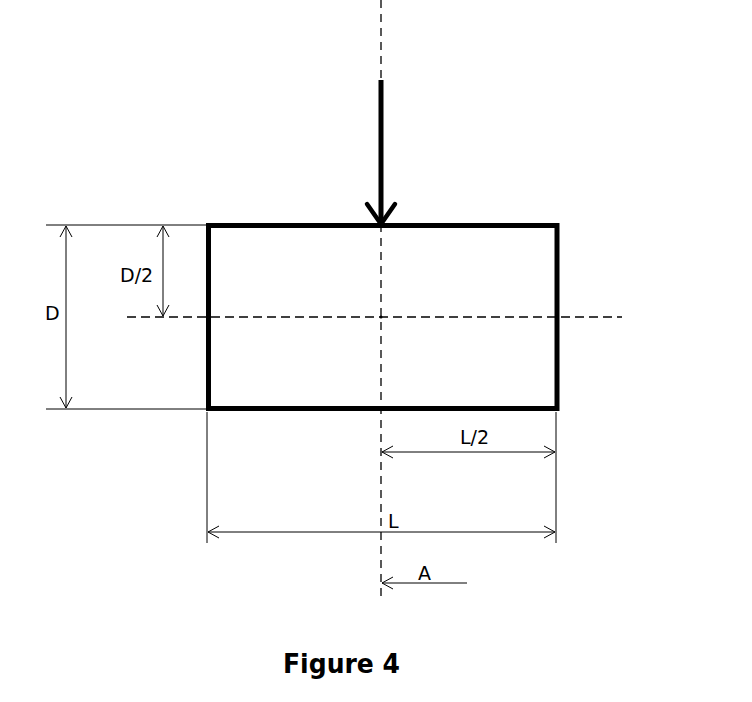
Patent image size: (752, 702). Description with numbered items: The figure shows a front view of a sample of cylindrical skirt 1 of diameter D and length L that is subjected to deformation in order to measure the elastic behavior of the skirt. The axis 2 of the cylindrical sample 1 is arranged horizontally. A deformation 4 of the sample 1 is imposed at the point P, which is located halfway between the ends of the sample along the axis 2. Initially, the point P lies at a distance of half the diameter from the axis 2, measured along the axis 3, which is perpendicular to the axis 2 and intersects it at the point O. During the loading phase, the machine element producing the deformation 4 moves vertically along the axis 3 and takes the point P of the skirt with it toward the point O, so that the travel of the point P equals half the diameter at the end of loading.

The sample of cylindrical skirt 1 is at (291, 223).
The axis 2 is at (600, 315).
The axis 3 is at (382, 44).
The deformation 4 is at (383, 138).
The point P is at (384, 222).
The point O is at (382, 315).